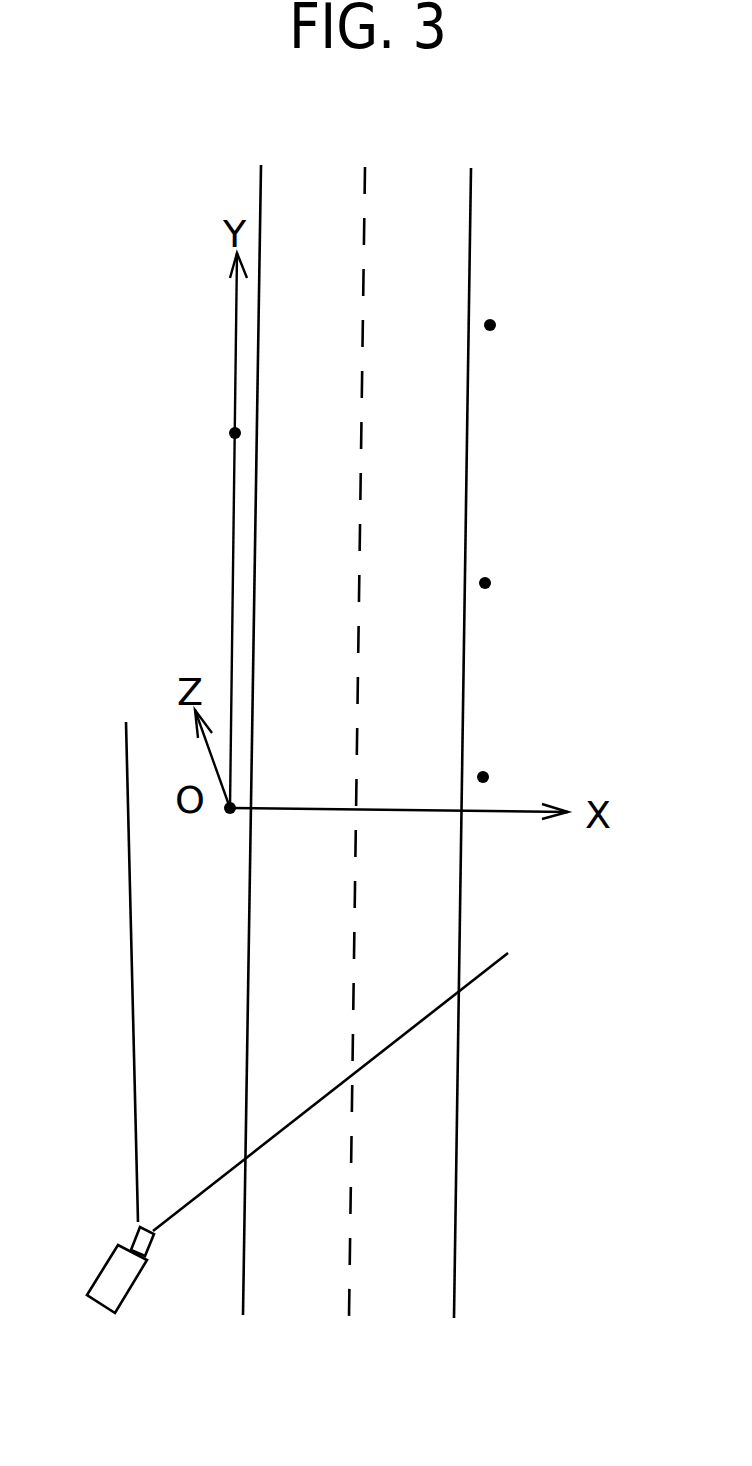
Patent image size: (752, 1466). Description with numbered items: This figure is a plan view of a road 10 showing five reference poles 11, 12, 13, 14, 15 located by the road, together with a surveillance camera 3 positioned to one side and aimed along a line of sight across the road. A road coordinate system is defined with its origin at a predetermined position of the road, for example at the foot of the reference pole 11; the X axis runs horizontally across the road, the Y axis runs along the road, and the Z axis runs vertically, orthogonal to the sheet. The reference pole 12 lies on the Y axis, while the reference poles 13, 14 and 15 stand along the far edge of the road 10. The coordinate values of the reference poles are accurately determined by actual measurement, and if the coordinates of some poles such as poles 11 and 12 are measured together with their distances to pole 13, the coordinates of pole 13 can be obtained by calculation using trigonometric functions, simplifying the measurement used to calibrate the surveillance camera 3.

The surveillance camera 3 is at (102, 1267).
The road 10 is at (453, 213).
The reference pole 11 is at (228, 812).
The reference pole 12 is at (235, 433).
The reference pole 13 is at (483, 777).
The reference pole 14 is at (485, 583).
The reference pole 15 is at (490, 325).